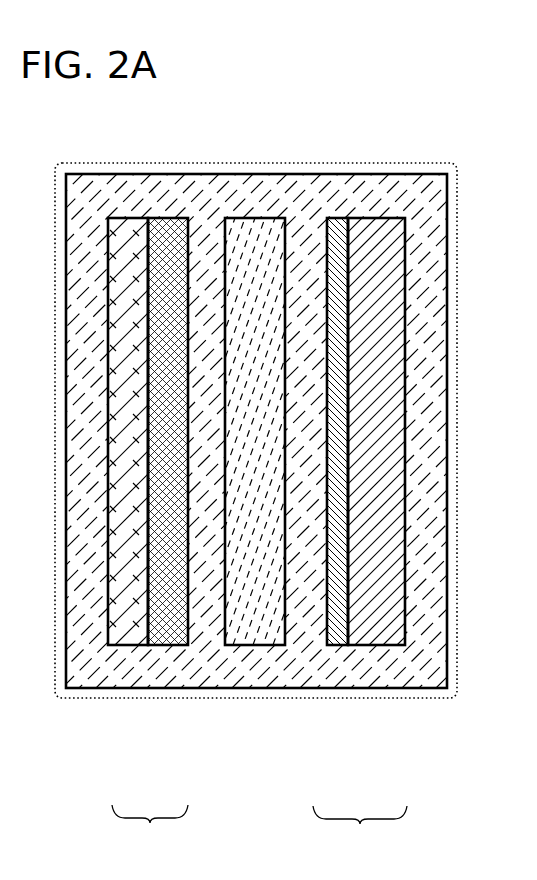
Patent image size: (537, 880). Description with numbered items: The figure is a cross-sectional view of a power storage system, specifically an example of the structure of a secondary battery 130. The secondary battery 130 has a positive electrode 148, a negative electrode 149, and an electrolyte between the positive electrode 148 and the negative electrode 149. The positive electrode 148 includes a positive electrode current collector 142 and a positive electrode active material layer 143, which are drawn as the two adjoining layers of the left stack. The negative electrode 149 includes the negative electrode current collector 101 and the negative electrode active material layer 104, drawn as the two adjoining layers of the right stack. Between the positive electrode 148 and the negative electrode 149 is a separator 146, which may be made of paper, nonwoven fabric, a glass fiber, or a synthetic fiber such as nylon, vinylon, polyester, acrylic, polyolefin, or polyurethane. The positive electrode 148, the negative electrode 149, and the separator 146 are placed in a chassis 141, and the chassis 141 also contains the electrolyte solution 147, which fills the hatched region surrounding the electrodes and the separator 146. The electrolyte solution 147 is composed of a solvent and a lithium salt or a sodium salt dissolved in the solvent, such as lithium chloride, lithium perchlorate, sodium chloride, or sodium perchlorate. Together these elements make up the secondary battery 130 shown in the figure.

The negative electrode current collector 101 is at (376, 627).
The negative electrode active material layer 104 is at (340, 630).
The secondary battery 130 is at (170, 163).
The chassis 141 is at (414, 173).
The positive electrode current collector 142 is at (127, 627).
The positive electrode active material layer 143 is at (165, 628).
The separator 146 is at (257, 627).
The electrolyte solution 147 is at (92, 188).
The positive electrode 148 is at (268, 537).
The negative electrode 149 is at (268, 536).